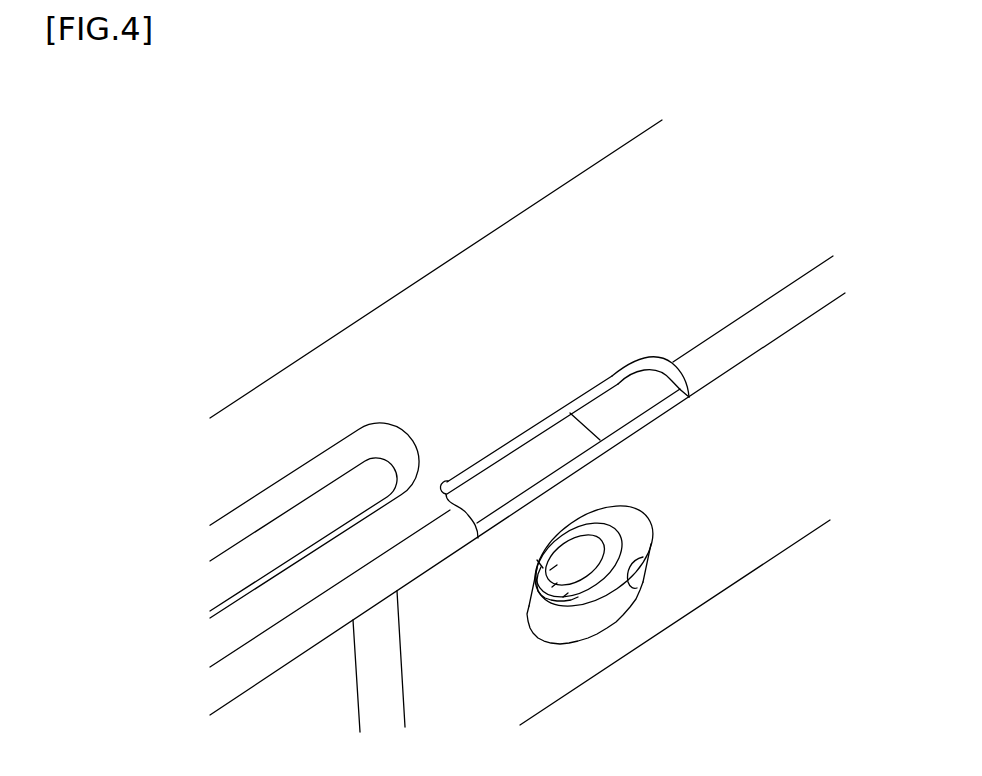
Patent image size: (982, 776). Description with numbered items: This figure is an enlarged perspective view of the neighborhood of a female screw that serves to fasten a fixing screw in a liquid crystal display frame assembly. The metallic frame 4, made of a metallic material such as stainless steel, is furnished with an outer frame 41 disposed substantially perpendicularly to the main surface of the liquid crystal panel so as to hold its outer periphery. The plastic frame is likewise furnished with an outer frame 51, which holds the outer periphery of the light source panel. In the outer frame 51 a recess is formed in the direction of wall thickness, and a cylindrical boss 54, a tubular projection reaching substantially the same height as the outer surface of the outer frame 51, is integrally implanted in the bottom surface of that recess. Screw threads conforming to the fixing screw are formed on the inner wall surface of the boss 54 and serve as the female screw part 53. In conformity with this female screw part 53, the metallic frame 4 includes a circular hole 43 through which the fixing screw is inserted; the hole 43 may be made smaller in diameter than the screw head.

The metallic frame 4 is at (348, 326).
The outer frame 41 is at (772, 546).
The circular hole 43 is at (637, 588).
The outer frame 51 is at (613, 393).
The female screw part 53 is at (553, 592).
The cylindrical boss 54 is at (603, 593).